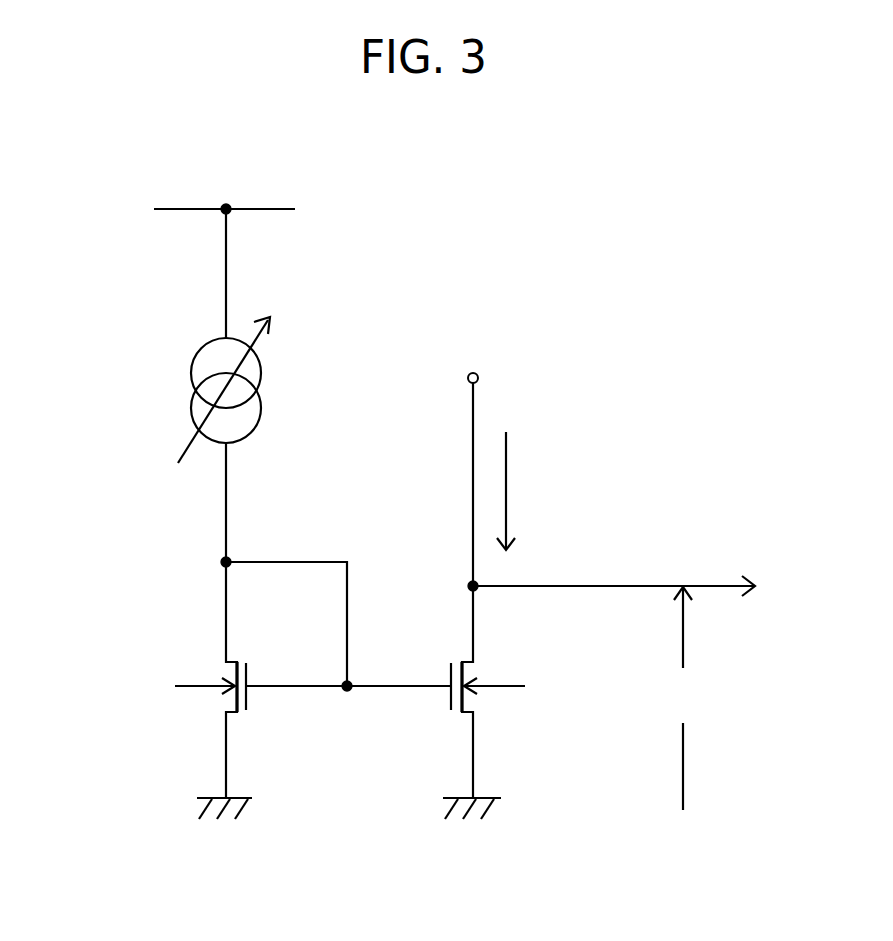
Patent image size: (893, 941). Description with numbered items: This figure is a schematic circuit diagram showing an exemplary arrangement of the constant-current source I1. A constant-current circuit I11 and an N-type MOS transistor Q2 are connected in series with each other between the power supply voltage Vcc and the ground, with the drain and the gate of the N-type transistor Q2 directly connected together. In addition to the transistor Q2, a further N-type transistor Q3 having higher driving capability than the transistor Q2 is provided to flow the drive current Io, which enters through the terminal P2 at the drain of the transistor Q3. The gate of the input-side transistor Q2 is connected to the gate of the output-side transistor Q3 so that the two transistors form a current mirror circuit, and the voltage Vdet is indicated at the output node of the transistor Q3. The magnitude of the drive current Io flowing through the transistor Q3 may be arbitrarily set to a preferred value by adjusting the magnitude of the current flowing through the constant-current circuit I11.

The constant-current source I1 is at (98, 218).
The constant-current circuit I11 is at (187, 377).
The N-type MOS transistor Q2 is at (191, 690).
The N-type MOS transistor Q3 is at (502, 702).
The terminal P2 is at (470, 464).
The power supply voltage Vcc is at (251, 209).
The drive current Io is at (518, 491).
The detection voltage Vdet is at (680, 698).